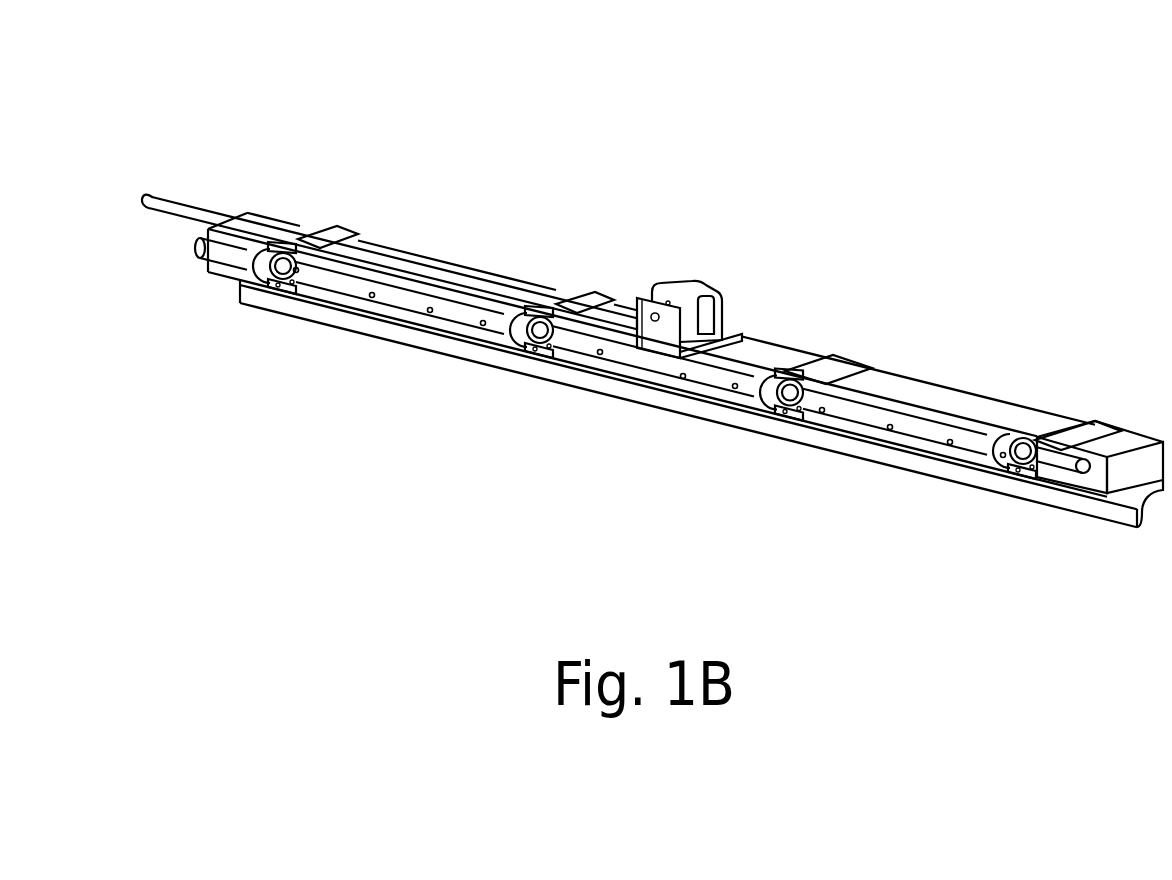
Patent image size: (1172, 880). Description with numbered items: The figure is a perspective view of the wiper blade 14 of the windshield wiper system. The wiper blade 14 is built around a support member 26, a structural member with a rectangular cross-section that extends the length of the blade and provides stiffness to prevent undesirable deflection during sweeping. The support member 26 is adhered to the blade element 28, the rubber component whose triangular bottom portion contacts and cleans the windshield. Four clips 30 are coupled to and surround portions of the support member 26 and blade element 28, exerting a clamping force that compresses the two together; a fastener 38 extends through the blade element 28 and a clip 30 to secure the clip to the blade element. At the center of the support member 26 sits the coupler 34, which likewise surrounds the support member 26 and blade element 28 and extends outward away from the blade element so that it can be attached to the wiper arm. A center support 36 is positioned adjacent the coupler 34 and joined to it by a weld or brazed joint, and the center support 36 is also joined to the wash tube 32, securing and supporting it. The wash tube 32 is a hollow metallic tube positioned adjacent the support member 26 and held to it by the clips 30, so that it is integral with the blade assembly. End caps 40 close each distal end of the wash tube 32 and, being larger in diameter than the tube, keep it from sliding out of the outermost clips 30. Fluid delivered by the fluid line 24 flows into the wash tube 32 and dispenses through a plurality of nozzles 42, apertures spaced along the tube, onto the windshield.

The wiper blade 14 is at (917, 152).
The fluid line 24 is at (186, 210).
The support member 26 is at (947, 400).
The blade element 28 is at (426, 339).
The clips 30 is at (586, 296).
The wash tube 32 is at (855, 412).
The coupler 34 is at (688, 292).
The center support 36 is at (636, 298).
The fastener 38 is at (781, 417).
The end caps 40 is at (1083, 474).
The nozzles 42 is at (369, 297).